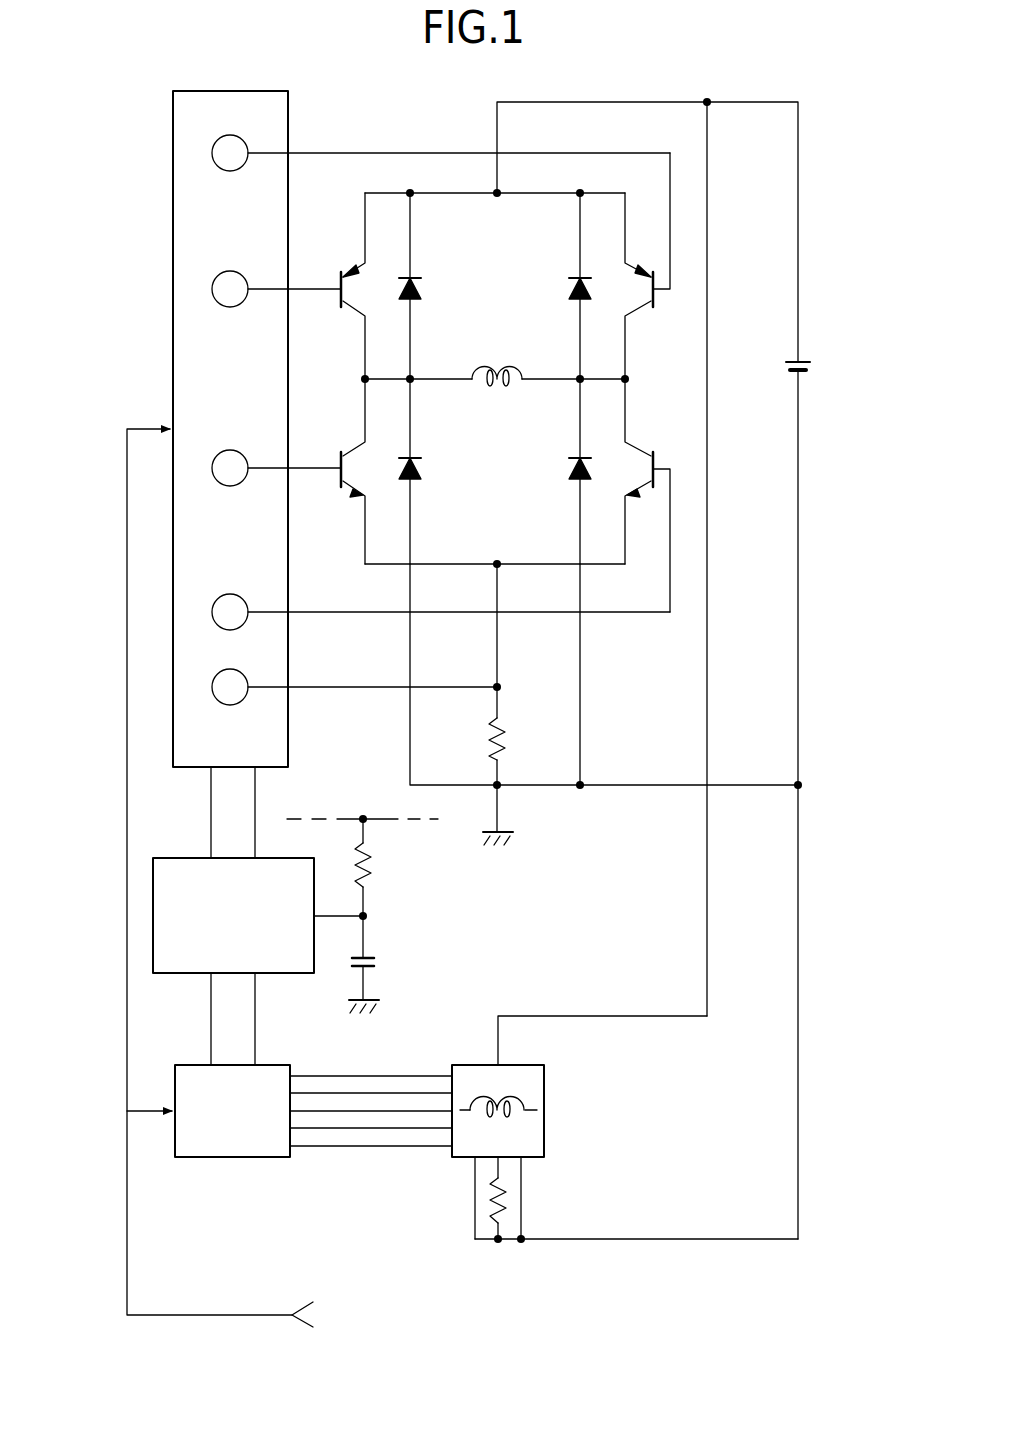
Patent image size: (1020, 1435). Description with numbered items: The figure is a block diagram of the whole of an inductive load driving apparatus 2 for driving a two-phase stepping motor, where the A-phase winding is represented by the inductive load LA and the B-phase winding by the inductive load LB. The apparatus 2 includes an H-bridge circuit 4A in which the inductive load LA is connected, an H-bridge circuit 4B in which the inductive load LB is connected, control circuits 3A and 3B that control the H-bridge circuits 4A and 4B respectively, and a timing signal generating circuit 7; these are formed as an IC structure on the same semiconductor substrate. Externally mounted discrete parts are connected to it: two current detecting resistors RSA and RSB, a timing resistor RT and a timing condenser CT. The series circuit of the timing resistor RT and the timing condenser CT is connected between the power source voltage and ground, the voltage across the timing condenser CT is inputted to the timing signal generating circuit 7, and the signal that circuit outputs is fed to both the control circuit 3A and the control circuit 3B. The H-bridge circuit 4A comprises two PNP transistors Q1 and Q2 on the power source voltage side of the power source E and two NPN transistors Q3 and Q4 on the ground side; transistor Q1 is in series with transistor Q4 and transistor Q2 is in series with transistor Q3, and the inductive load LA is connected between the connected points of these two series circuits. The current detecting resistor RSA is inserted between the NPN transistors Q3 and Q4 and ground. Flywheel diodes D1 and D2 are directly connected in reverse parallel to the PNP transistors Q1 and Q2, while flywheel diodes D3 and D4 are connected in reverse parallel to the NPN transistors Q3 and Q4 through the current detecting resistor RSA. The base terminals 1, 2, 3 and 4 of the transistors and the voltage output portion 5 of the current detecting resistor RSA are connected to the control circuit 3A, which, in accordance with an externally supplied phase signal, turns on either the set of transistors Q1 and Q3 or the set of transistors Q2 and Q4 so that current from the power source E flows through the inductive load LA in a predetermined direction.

The inductive load driving apparatus 2 is at (150, 62).
The control circuit 3A is at (290, 113).
The control circuit 3B is at (194, 1064).
The H-bridge circuit 4A is at (403, 170).
The H-bridge circuit 4B is at (579, 1074).
The timing signal generating circuit 7 is at (190, 858).
The base terminal 1 is at (276, 289).
The base terminal 3 is at (441, 549).
The base terminal 4 is at (276, 468).
The voltage output portion 5 is at (354, 687).
The PNP transistor Q1 is at (349, 262).
The PNP transistor Q2 is at (640, 246).
The NPN transistor Q3 is at (642, 456).
The NPN transistor Q4 is at (349, 442).
The flywheel diode D1 is at (422, 288).
The flywheel diode D2 is at (572, 276).
The flywheel diode D3 is at (572, 456).
The flywheel diode D4 is at (422, 468).
The inductive load LA is at (497, 365).
The inductive load LB is at (500, 1090).
The power source E is at (815, 368).
The current detecting resistor RSA is at (508, 728).
The current detecting resistor RSB is at (506, 1200).
The timing resistor RT is at (380, 865).
The timing condenser CT is at (380, 962).